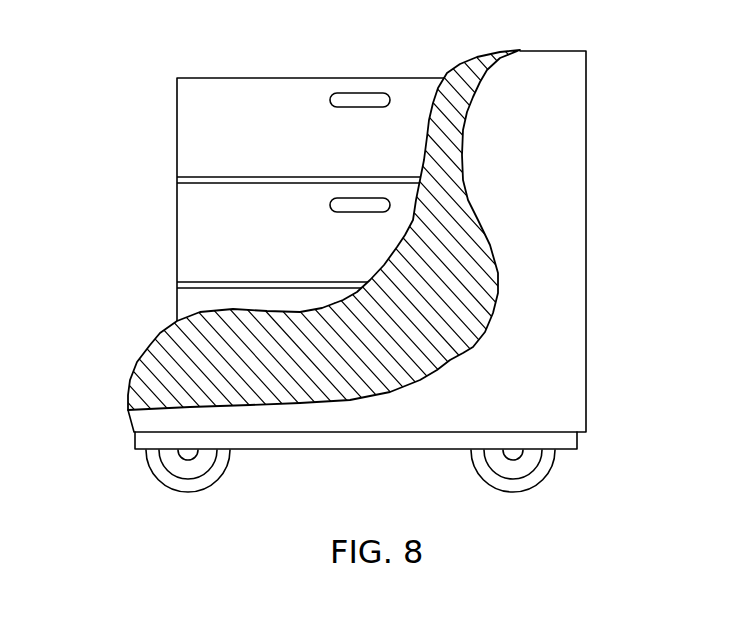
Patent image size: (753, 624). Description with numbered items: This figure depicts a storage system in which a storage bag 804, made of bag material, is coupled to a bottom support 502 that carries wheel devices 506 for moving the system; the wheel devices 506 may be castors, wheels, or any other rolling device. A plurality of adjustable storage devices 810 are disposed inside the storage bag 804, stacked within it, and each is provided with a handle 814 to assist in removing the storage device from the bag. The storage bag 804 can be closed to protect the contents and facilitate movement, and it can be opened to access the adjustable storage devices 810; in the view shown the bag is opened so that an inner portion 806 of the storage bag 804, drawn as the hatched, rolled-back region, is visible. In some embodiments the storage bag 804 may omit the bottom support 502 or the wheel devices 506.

The storage bag 804 is at (586, 115).
The inner portion 806 is at (467, 190).
The adjustable storage devices 810 is at (177, 127).
The handles 814 is at (353, 92).
The bottom support 502 is at (133, 450).
The wheel devices 506 is at (190, 493).